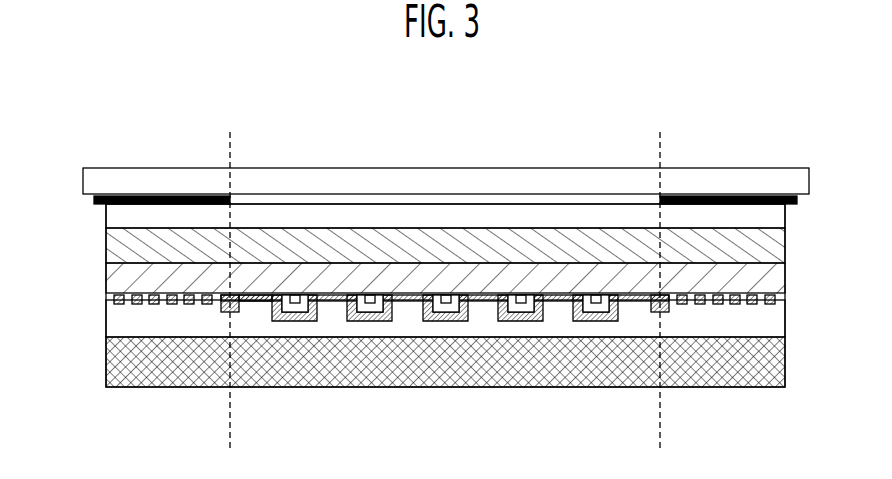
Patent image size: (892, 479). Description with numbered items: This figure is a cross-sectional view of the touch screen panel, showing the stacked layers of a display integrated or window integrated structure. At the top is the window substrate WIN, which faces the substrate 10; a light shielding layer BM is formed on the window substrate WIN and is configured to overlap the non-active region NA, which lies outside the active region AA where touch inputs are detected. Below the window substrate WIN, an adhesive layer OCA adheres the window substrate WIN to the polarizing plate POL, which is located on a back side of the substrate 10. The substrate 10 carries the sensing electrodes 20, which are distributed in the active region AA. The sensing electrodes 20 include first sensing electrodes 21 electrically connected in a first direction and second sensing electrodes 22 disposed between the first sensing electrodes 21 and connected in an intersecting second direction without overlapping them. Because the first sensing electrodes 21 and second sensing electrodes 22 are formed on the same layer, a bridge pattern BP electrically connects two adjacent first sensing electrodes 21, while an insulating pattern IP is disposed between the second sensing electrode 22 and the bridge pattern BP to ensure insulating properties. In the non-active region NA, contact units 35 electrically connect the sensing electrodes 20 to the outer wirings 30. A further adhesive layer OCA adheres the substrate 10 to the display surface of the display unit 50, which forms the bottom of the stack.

The window substrate WIN is at (83, 181).
The light shielding layer BM is at (94, 200).
The adhesive layers OCA is at (106, 218).
The polarizing plate POL is at (106, 247).
The substrate 10 is at (106, 280).
The sensing electrodes 20 is at (428, 386).
The first sensing electrodes 21 is at (258, 301).
The second sensing electrodes 22 is at (284, 303).
The insulating pattern IP is at (296, 306).
The bridge pattern BP is at (310, 321).
The outer wirings 30 is at (153, 305).
The contact units 35 is at (222, 312).
The display unit 50 is at (106, 362).
The non-active region NA is at (84, 149).
The active region AA is at (659, 149).